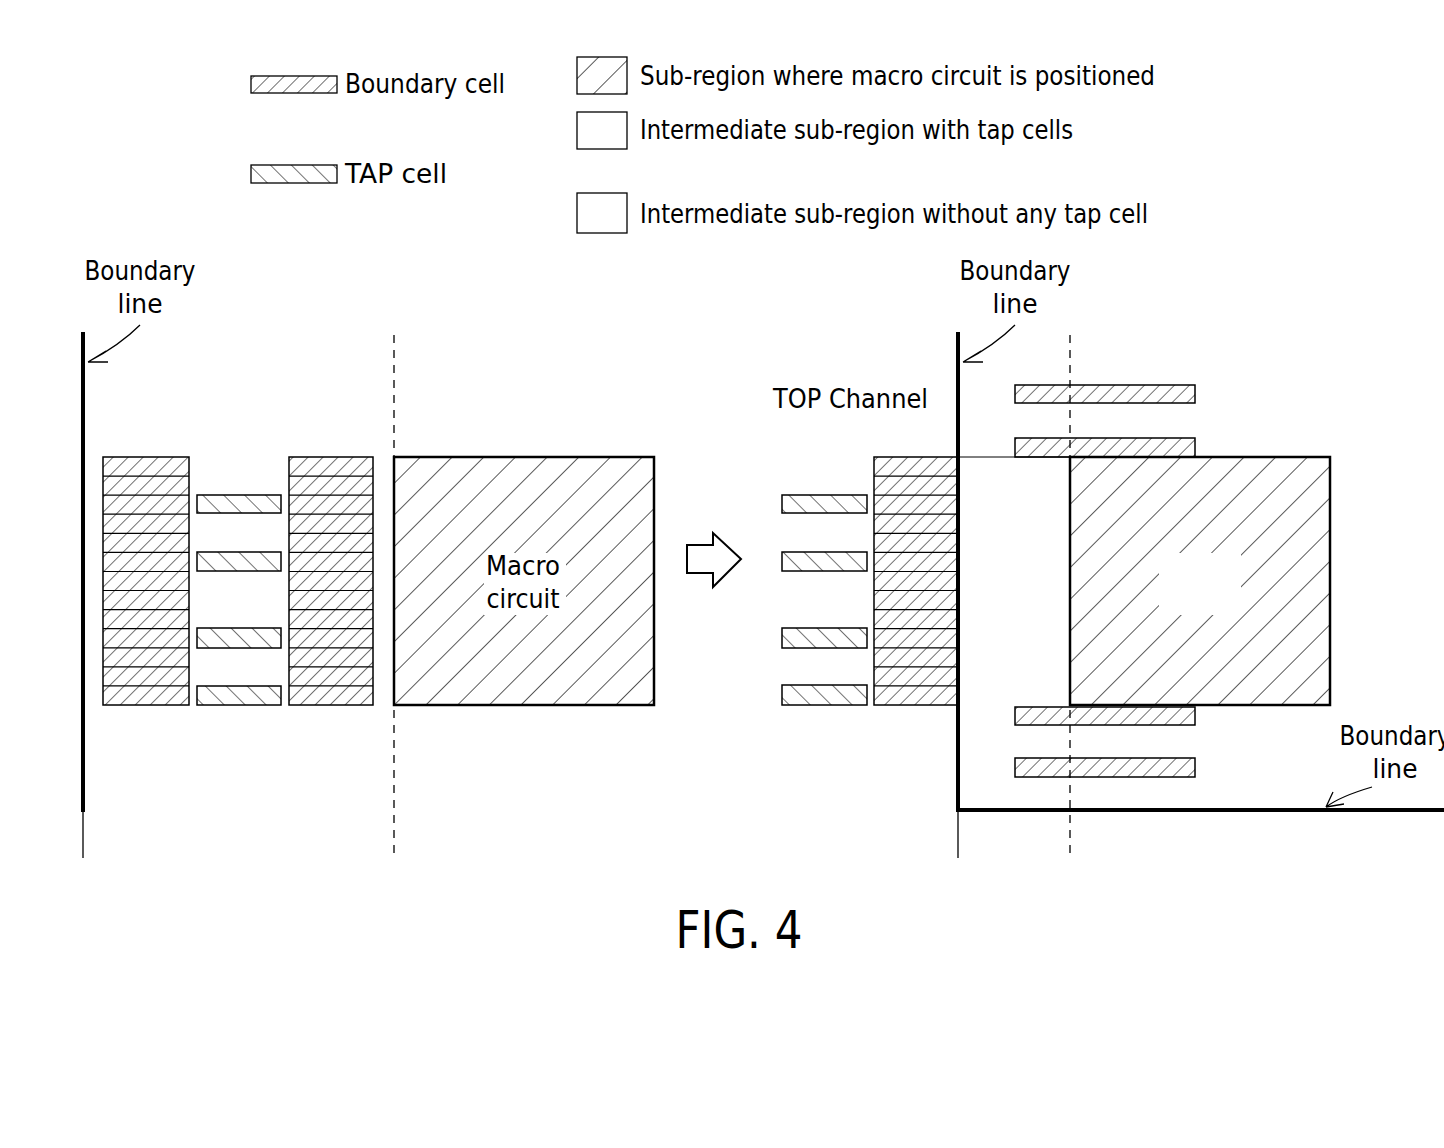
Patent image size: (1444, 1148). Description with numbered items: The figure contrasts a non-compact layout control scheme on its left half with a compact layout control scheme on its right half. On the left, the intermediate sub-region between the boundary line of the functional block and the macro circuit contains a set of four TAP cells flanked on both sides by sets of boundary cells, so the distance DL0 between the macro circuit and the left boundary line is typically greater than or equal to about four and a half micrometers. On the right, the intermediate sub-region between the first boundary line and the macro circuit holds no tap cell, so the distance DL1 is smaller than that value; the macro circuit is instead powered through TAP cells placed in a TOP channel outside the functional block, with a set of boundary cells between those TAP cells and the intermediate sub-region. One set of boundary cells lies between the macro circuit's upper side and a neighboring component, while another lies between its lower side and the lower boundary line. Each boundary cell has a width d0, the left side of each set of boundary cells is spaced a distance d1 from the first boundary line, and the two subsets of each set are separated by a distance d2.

The distance between the macro circuit and the left boundary line DL0 is at (381, 855).
The distance between the macro circuit ML(n) and the first boundary line DL1 is at (1057, 856).
The width of each boundary cell d0 is at (1002, 682).
The distance between the first boundary line and the left side of the set of boundar d1 is at (1003, 451).
The distance between two subsets of the set of boundary cells d2 is at (1056, 725).